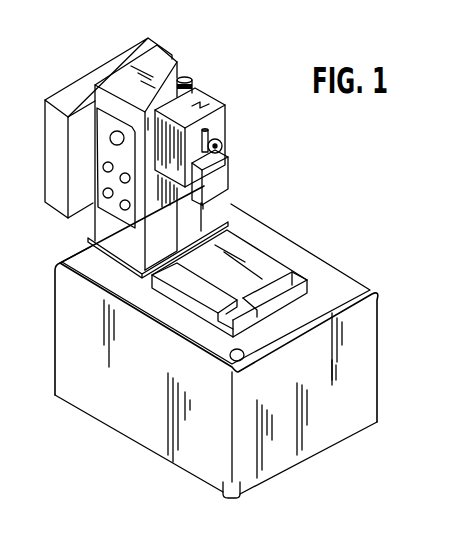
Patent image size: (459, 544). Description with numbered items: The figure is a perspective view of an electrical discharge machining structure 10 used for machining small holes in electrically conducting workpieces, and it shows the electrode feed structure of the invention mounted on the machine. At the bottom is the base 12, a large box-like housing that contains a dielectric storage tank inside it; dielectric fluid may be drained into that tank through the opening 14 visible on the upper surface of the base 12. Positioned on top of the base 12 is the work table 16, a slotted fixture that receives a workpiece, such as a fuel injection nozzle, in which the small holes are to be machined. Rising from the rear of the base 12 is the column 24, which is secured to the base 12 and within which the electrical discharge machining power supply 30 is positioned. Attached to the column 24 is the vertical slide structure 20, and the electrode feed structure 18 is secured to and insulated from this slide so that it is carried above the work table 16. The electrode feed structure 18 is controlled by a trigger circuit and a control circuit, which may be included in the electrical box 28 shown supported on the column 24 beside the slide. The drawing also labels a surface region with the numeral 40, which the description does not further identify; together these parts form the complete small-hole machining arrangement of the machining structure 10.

The electrical discharge machining structure 10 is at (338, 170).
The base 12 is at (150, 447).
The opening 14 is at (244, 361).
The work table 16 is at (278, 260).
The electrode feed structure 18 is at (228, 153).
The vertical slide structure 20 is at (205, 102).
The column 24 is at (185, 75).
The electrical box 28 is at (45, 127).
The electrical discharge machining power supply 30 is at (100, 226).
The top surface 40 is at (345, 280).